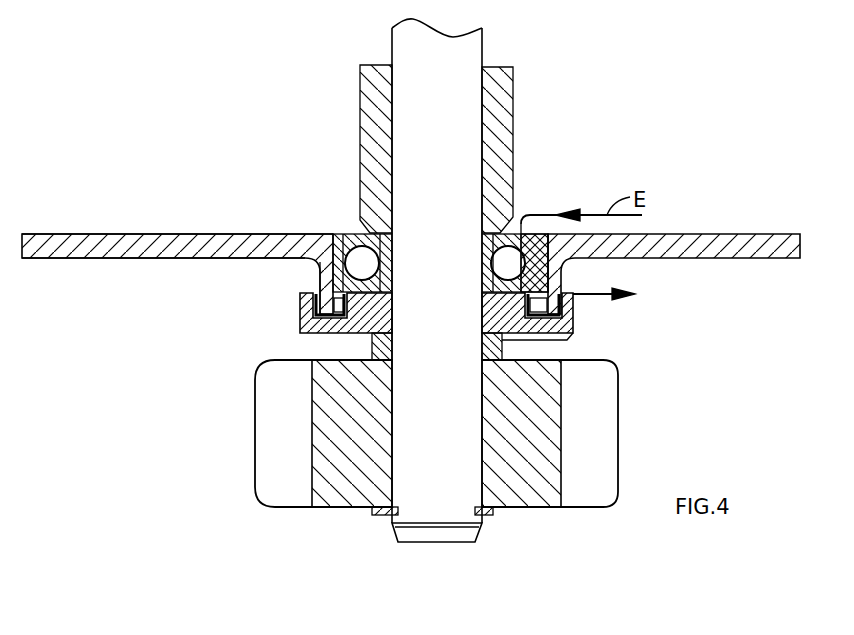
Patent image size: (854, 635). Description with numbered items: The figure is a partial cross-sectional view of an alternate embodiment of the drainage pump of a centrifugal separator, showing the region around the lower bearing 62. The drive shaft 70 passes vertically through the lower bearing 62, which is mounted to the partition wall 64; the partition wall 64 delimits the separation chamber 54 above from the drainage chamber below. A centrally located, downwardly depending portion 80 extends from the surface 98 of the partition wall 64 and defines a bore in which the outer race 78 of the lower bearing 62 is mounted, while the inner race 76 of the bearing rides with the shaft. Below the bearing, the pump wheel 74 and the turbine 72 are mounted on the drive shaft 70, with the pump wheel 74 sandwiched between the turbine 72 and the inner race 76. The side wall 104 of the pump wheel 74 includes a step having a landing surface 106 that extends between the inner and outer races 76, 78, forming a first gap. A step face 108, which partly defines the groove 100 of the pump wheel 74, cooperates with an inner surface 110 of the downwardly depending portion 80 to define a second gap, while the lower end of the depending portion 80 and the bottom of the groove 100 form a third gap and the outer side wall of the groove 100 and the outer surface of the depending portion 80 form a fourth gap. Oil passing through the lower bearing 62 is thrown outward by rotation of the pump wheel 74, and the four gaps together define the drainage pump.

The separation chamber 54 is at (204, 82).
The surface 98 is at (90, 232).
The outer race 78 is at (247, 233).
The lower bearing 62 is at (334, 223).
The inner race 76 is at (355, 233).
The side wall 104 is at (478, 282).
The landing surface 106 is at (535, 247).
The downwardly depending portion 80 is at (317, 282).
The inner surface 110 is at (318, 312).
The groove 100 is at (302, 335).
The step face 108 is at (340, 307).
The turbine 72 is at (325, 508).
The drive shaft 70 is at (463, 542).
The partition wall 64 is at (84, 270).
The pump wheel 74 is at (587, 346).